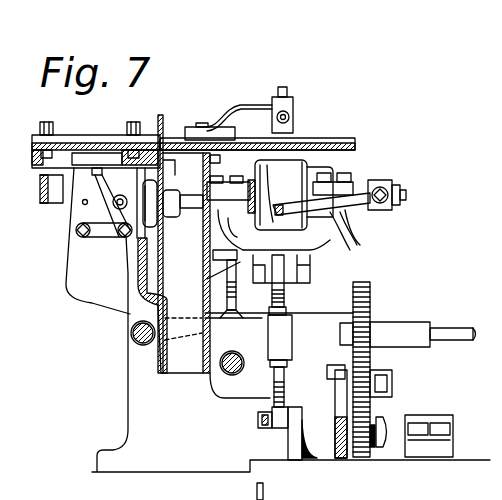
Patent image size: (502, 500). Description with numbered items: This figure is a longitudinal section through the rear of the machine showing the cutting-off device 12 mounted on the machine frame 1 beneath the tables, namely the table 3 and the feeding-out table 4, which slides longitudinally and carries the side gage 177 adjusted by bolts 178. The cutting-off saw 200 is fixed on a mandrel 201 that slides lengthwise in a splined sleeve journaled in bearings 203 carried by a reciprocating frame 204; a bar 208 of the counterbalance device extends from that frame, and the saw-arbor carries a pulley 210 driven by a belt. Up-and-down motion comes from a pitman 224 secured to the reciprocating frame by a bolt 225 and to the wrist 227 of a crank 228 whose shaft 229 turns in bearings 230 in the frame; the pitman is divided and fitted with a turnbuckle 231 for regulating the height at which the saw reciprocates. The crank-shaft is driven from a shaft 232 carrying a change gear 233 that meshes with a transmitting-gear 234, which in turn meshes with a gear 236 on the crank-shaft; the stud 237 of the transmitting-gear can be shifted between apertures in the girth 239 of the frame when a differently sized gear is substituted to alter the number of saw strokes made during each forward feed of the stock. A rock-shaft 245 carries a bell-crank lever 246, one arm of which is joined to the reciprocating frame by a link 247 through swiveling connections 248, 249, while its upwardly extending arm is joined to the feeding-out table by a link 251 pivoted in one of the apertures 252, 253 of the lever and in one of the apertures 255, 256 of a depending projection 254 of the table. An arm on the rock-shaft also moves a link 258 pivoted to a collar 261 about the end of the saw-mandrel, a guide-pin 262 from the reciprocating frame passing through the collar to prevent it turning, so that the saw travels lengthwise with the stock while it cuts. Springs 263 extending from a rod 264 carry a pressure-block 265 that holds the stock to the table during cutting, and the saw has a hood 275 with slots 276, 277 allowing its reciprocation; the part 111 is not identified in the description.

The frame 1 is at (291, 354).
The bed plate 3 is at (347, 140).
The feeding-out table 4 is at (82, 146).
The cutting-off device 12 is at (183, 162).
The pin 111 is at (225, 373).
The side gage 177 is at (106, 135).
The bolts 178 is at (43, 127).
The cutting-off saw 200 is at (162, 128).
The mandrel 201 is at (190, 210).
The bearings 203 is at (377, 233).
The reciprocating frame 204 is at (323, 232).
The bar 208 is at (266, 496).
The pulley 210 is at (304, 195).
The pitman 224 is at (287, 299).
The bolt 225 is at (311, 269).
The wrist 227 is at (258, 419).
The crank 228 is at (288, 442).
The crank-shaft 229 is at (390, 430).
The bearings 230 is at (323, 441).
The turnbuckle 231 is at (288, 334).
The shaft 232 is at (457, 332).
The gear 233 is at (372, 309).
The transmitting-gear 234 is at (381, 372).
The gear 236 is at (373, 436).
The stud 237 is at (328, 370).
The girth 239 is at (341, 460).
The rock-shaft 245 is at (135, 341).
The bell-crank lever 246 is at (128, 275).
The link 247 is at (236, 287).
The swiveling connection 248 is at (207, 280).
The swiveling connection 249 is at (202, 341).
The link 251 is at (107, 233).
The aperture 252 is at (120, 196).
The aperture 253 is at (163, 251).
The depending projection 254 is at (80, 182).
The aperture 255 is at (82, 204).
The aperture 256 is at (77, 234).
The link 258 is at (335, 224).
The collar 261 is at (383, 187).
The guide-pin 262 is at (400, 210).
The springs 263 is at (257, 103).
The rod 264 is at (294, 113).
The pressure-block 265 is at (193, 127).
The hood 275 is at (128, 317).
The slot 276 is at (215, 180).
The slot 277 is at (211, 165).